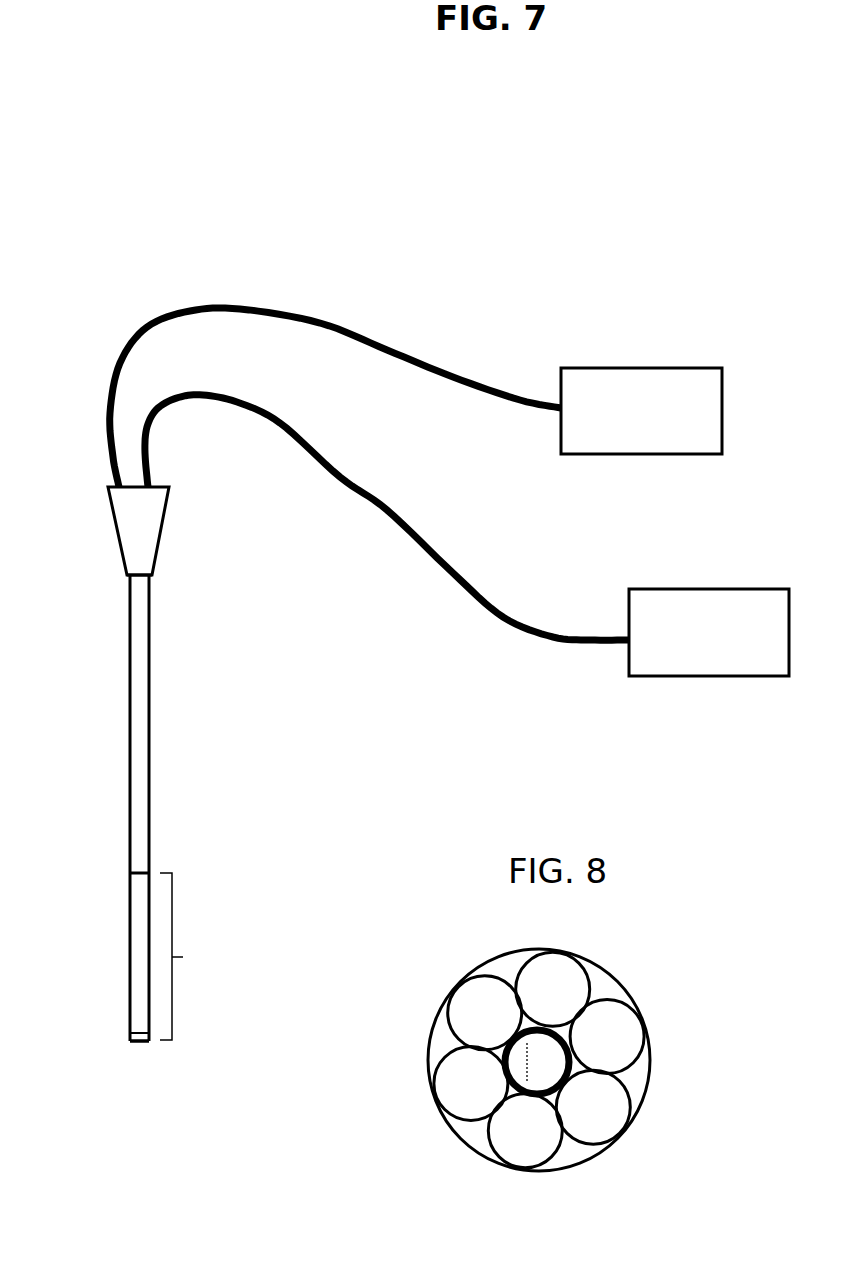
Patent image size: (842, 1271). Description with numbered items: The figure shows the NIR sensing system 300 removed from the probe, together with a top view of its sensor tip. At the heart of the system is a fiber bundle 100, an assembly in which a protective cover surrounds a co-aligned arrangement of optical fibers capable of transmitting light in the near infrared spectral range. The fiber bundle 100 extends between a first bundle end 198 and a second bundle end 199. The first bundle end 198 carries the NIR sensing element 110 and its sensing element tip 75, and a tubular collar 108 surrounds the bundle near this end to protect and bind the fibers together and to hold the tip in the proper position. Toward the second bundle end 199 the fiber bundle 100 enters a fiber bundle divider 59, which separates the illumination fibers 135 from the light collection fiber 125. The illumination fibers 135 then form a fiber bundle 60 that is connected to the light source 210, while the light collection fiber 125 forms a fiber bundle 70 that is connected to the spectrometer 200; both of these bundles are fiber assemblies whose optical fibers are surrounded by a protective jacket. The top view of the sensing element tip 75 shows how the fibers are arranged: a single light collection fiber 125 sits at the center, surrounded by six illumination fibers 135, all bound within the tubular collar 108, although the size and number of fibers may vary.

In FIG. 7, the NIR sensing system 300 is at (578, 213).
In FIG. 7, the spectrometer 200 is at (641, 411).
In FIG. 7, the light source 210 is at (709, 632).
In FIG. 7, the fiber bundle 70 is at (118, 387).
In FIG. 7, the fiber bundle 60 is at (143, 443).
In FIG. 7, the fiber bundle divider 59 is at (163, 542).
In FIG. 7, the second bundle end 199 is at (127, 577).
In FIG. 7, the fiber bundle 100 is at (128, 744).
In FIG. 8, the fiber bundle 100 is at (573, 1139).
In FIG. 7, the tubular collar 108 is at (128, 936).
In FIG. 7, the NIR sensing element 110 is at (196, 956).
In FIG. 8, the NIR sensing element 110 is at (460, 1140).
In FIG. 7, the sensing element tip 75 is at (130, 1035).
In FIG. 8, the sensing element tip 75 is at (403, 1011).
In FIG. 7, the first bundle end 198 is at (138, 1042).
In FIG. 8, the illumination fibers 135 is at (635, 1003).
In FIG. 8, the light collection fiber 125 is at (573, 1063).